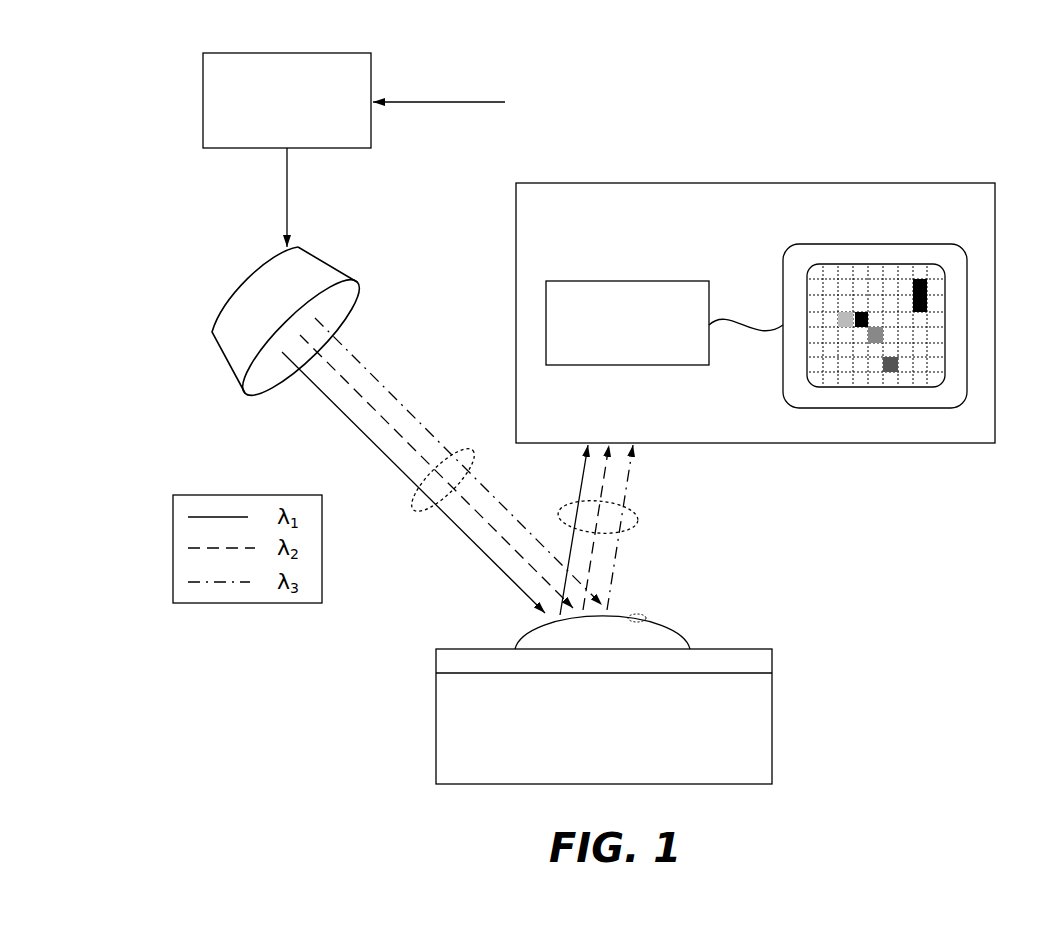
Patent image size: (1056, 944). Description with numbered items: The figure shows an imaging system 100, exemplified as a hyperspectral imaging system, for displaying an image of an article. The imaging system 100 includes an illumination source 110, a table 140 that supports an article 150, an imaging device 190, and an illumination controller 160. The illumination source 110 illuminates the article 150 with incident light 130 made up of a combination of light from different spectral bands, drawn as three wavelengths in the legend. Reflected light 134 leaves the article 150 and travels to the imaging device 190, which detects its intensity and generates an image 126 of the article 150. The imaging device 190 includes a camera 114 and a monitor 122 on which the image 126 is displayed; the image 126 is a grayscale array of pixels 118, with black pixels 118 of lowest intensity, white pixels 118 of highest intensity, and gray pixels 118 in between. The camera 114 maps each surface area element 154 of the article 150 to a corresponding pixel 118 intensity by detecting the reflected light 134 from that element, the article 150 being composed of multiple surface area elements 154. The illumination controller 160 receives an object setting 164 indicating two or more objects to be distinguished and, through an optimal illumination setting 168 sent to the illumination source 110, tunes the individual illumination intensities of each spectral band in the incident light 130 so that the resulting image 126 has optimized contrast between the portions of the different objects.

The imaging system 100 is at (1000, 99).
The illumination source 110 is at (325, 260).
The camera 114 is at (664, 323).
The pixel 118 is at (920, 350).
The monitor 122 is at (903, 408).
The image 126 is at (922, 258).
The incident light 130 is at (467, 452).
The reflected light 134 is at (637, 517).
The table 140 is at (772, 720).
The article 150 is at (680, 628).
The surface area element 154 is at (640, 612).
The illumination controller 160 is at (287, 100).
The object setting 164 is at (476, 99).
The optimal illumination setting 168 is at (222, 201).
The imaging device 190 is at (755, 313).